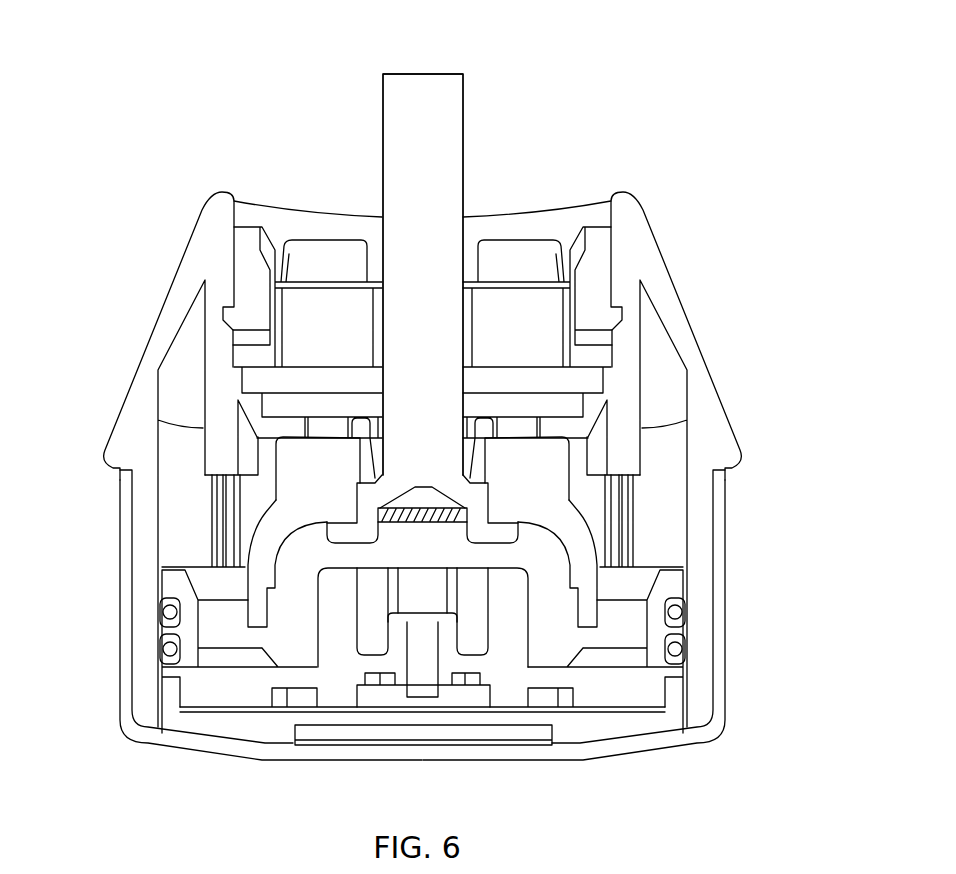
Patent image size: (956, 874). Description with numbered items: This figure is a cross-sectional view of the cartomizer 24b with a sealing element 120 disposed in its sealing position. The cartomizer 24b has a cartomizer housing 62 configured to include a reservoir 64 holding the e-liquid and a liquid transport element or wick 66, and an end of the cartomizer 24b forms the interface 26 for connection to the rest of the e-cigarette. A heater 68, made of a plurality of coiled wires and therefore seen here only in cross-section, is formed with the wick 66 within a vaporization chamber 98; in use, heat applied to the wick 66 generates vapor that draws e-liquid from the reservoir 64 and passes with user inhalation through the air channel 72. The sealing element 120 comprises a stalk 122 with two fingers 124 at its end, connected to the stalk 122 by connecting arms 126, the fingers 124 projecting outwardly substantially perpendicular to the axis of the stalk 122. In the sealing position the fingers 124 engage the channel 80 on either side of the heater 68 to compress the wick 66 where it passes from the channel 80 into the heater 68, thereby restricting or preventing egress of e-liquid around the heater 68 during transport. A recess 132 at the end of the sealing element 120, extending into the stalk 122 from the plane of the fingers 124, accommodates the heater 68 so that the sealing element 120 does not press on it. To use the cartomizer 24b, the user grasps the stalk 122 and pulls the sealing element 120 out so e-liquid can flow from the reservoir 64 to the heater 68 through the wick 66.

The sealing element 120 is at (458, 73).
The stalk 122 is at (403, 153).
The air channel 72 is at (528, 195).
The cartomizer 24b is at (632, 213).
The cartomizer housing 62 is at (667, 302).
The vaporization chamber 98 is at (567, 440).
The channel 80 is at (567, 553).
The reservoir 64 is at (620, 622).
The liquid transport element or wick 66 is at (555, 645).
The interface 26 is at (182, 748).
The heater 68 is at (377, 517).
The recess 132 is at (398, 492).
The fingers 124 is at (355, 543).
The connecting arms 126 is at (373, 477).